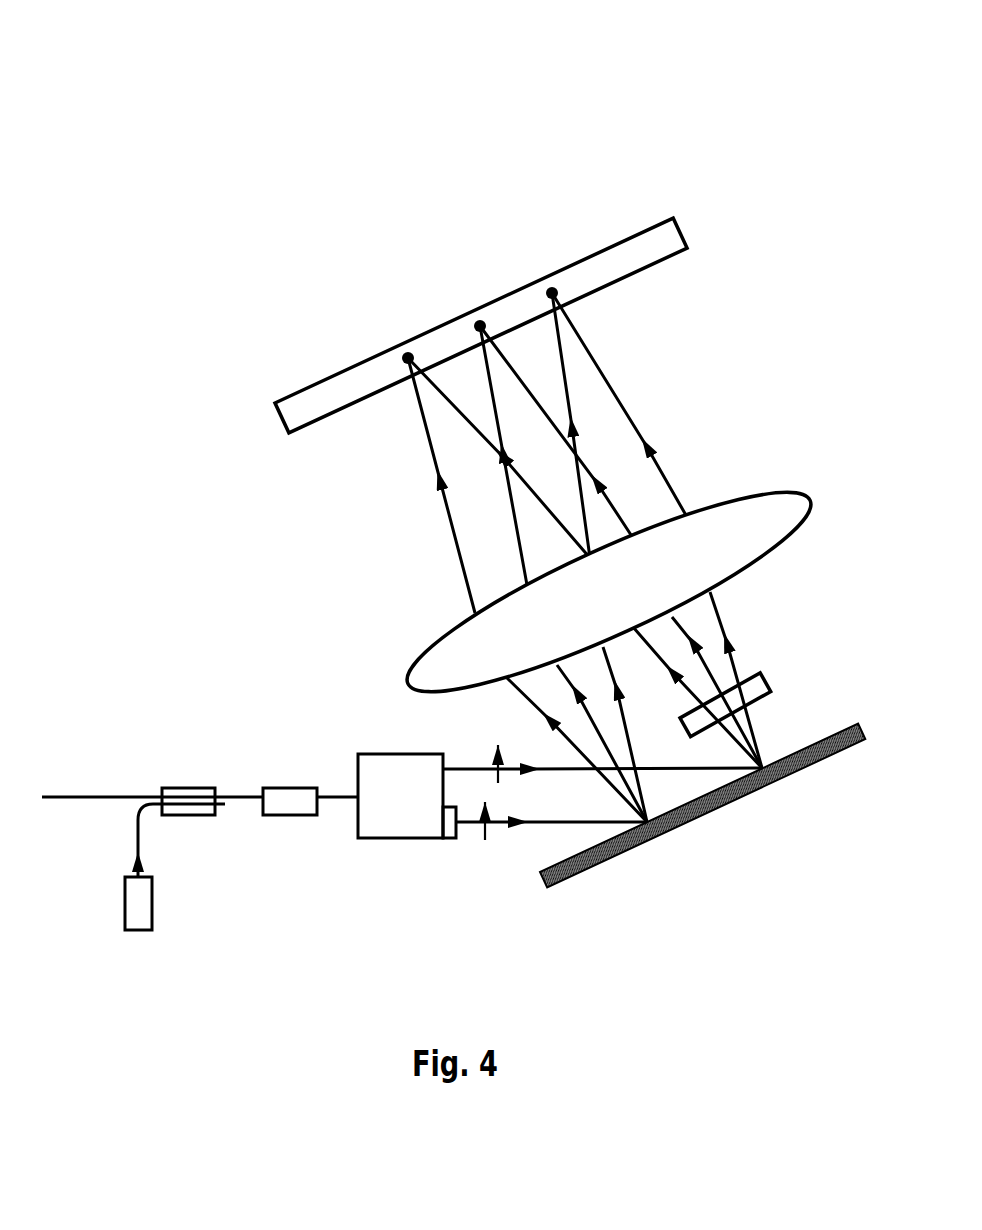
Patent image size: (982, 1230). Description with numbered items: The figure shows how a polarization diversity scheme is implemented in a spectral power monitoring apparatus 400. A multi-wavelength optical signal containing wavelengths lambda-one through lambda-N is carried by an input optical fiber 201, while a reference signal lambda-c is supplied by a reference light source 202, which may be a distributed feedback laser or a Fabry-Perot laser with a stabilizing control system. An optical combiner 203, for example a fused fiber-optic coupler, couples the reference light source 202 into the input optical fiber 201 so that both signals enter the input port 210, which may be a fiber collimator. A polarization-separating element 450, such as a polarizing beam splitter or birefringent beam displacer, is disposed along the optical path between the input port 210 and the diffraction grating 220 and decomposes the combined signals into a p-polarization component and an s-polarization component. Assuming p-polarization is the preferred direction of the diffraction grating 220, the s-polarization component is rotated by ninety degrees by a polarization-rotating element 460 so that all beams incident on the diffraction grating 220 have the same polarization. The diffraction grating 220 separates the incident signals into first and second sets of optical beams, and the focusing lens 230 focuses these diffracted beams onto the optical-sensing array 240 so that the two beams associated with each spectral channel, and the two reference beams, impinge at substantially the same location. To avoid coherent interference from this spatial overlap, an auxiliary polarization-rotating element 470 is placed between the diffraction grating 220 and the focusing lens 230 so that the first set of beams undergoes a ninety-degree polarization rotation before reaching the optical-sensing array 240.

The spectral power monitoring apparatus 400 is at (152, 88).
The input optical fiber 201 is at (105, 797).
The optical combiner 203 is at (192, 788).
The input port 210 is at (297, 788).
The polarization-separating element 450 is at (370, 754).
The polarization-rotating element 460 is at (448, 840).
The reference light source 202 is at (135, 932).
The optical-sensing array 240 is at (502, 297).
The focusing lens 230 is at (795, 495).
The auxiliary polarization-rotating element 470 is at (763, 677).
The diffraction grating 220 is at (817, 763).